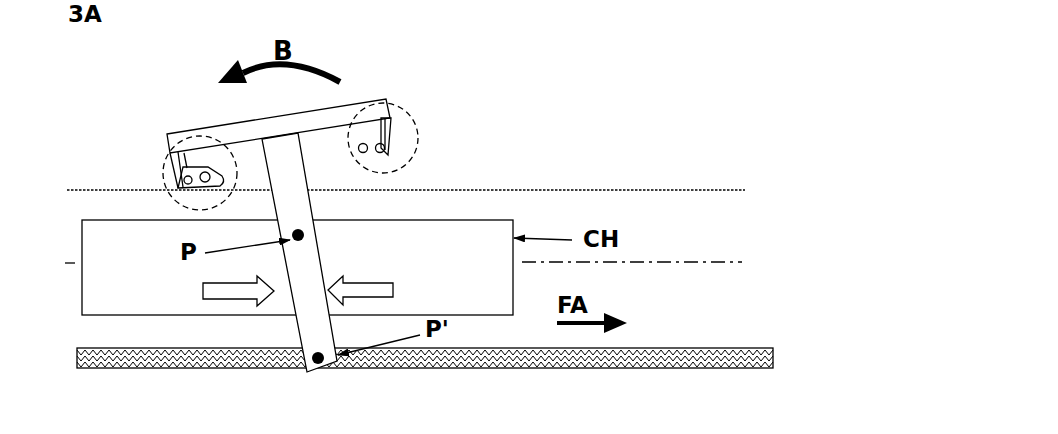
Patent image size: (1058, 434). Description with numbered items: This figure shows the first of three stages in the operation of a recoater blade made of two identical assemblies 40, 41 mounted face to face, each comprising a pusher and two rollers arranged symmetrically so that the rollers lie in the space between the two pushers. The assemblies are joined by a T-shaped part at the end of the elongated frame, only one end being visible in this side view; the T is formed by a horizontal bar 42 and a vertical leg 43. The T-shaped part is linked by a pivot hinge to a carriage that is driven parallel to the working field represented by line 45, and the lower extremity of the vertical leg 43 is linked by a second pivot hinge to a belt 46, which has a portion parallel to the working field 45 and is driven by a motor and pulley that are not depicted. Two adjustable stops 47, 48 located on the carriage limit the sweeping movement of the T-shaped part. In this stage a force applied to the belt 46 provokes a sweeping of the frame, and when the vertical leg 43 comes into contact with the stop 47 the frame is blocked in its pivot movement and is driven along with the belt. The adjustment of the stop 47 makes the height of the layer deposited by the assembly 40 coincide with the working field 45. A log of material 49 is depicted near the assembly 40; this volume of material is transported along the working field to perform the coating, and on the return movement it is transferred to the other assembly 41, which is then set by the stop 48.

The recoater blade assembly 40 is at (158, 130).
The recoater blade assembly 41 is at (422, 135).
The horizontal bar 42 is at (341, 112).
The vertical leg 43 is at (300, 193).
The working field line 45 is at (637, 190).
The belt 46 is at (717, 357).
The adjustable stop 47 is at (396, 292).
The adjustable stop 48 is at (198, 288).
The log of material 49 is at (208, 163).